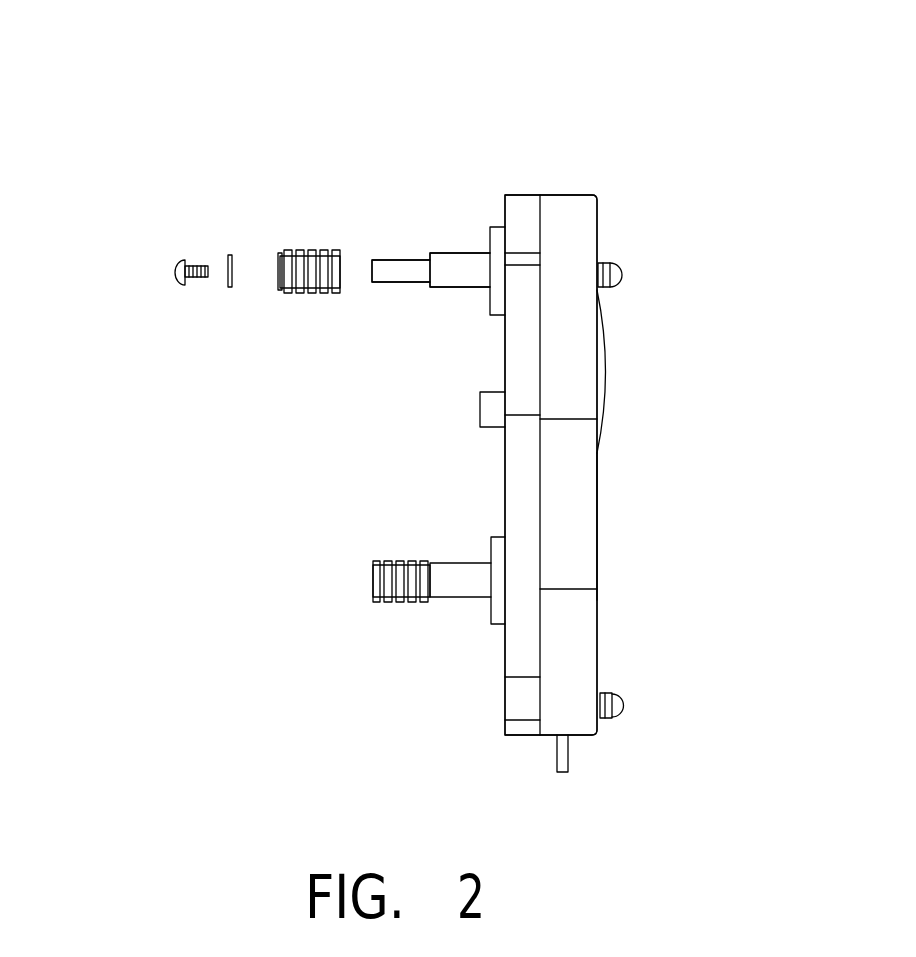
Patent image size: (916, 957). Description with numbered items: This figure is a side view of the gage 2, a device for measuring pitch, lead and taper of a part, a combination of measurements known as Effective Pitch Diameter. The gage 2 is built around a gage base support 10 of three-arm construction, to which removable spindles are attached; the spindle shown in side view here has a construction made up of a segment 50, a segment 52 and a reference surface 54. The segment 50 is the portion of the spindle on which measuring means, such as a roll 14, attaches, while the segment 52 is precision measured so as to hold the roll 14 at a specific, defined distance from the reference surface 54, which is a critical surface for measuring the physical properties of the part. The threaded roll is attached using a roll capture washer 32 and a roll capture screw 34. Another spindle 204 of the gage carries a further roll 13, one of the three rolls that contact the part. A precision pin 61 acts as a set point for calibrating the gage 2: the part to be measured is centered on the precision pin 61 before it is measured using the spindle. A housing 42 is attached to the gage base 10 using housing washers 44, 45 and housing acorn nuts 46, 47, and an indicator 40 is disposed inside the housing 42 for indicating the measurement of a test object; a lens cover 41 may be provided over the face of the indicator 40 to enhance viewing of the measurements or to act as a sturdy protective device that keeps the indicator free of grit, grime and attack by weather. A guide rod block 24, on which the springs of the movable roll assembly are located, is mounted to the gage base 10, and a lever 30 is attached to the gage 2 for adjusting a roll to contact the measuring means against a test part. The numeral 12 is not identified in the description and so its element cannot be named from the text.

The gage 2 is at (691, 522).
The gage base support 10 is at (327, 465).
The shaft assembly 12 is at (276, 349).
The roll 13 is at (243, 614).
The roll 14 is at (199, 315).
The guide rod block 24 is at (298, 738).
The lever 30 is at (312, 800).
The roll capture washer 32 is at (149, 213).
The roll capture screw 34 is at (137, 245).
The indicator 40 is at (718, 377).
The cover 41 is at (745, 362).
The housing 42 is at (716, 495).
The housing washer 44 is at (745, 591).
The housing washer 45 is at (740, 219).
The housing acorn nut 46 is at (758, 618).
The housing acorn nut 47 is at (746, 247).
The segment 50 is at (333, 201).
The segment 52 is at (394, 182).
The reference surface 54 is at (422, 164).
The precision pin 61 is at (283, 461).
The spindle 204 is at (272, 635).